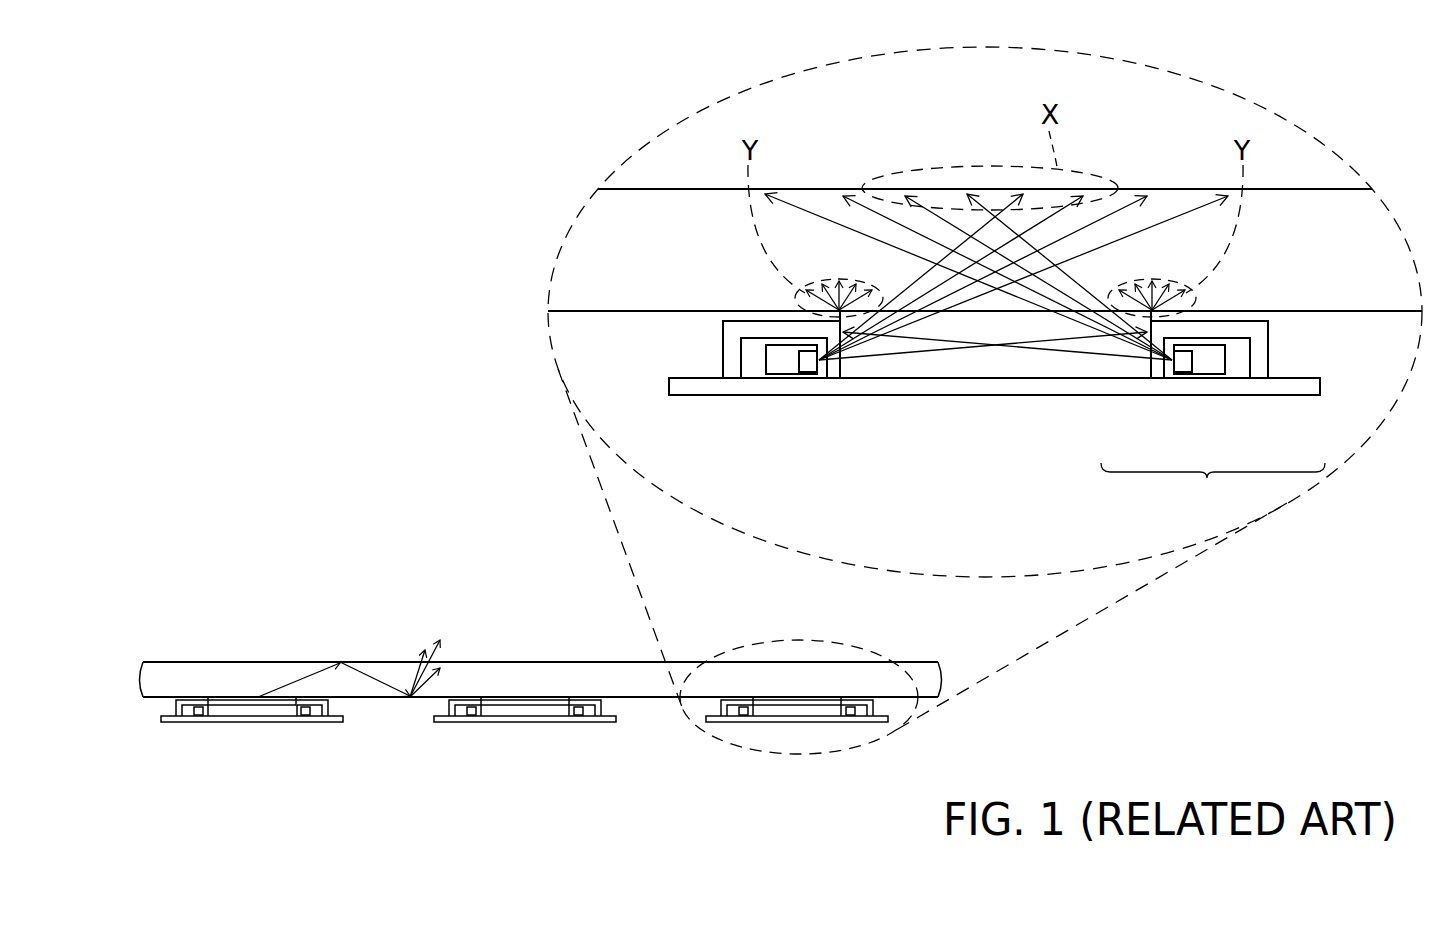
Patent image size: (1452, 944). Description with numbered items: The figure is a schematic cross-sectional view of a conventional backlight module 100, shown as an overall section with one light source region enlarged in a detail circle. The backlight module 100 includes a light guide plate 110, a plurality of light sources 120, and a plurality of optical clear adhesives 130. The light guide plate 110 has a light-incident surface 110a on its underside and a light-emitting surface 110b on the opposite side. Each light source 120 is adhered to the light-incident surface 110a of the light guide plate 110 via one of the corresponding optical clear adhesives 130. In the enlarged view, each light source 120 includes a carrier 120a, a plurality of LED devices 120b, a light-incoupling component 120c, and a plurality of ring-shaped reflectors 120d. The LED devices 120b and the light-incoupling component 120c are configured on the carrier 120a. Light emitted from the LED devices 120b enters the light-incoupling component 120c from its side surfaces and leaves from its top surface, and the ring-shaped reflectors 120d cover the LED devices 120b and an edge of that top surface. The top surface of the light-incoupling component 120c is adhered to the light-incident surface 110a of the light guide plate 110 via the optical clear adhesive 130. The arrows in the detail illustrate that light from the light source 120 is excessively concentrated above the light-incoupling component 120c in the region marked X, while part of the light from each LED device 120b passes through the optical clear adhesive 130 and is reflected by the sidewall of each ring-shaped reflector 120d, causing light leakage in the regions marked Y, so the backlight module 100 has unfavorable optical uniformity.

The backlight module 100 is at (943, 771).
The light guide plate 110 is at (588, 237).
The light-incident surface 110a is at (655, 316).
The light-emitting surface 110b is at (715, 185).
The light source 120 is at (256, 775).
The carrier 120a is at (1295, 392).
The LED device 120b is at (783, 370).
The light-incoupling component 120c is at (1115, 372).
The ring-shaped reflector 120d is at (733, 373).
The optical clear adhesive 130 is at (943, 327).